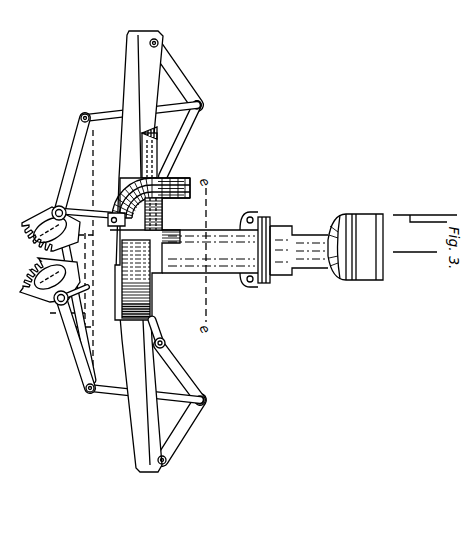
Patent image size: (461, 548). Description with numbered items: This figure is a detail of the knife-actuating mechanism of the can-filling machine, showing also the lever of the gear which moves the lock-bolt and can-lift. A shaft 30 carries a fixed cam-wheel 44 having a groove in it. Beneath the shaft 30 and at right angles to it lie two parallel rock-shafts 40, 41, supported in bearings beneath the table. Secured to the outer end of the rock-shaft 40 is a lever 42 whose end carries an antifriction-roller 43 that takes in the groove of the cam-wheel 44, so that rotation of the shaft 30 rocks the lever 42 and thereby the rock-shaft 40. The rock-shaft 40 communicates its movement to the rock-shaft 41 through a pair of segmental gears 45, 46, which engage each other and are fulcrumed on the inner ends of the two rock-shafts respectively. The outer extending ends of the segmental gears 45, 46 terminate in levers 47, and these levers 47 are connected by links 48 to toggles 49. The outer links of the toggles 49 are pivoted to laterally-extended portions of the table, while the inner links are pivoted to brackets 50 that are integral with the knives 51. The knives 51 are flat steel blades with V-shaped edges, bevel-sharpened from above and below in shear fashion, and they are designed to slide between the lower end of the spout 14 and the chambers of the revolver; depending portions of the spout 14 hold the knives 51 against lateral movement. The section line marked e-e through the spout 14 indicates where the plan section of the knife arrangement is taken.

The spout 14 is at (166, 249).
The shaft 30 is at (143, 143).
The rock-shaft 40 is at (54, 209).
The rock-shaft 41 is at (56, 301).
The lever 42 is at (96, 211).
The antifriction-roller 43 is at (113, 232).
The cam-wheel 44 is at (167, 200).
The segmental gear 45 is at (41, 229).
The segmental gear 46 is at (30, 293).
The levers 47 is at (77, 128).
The links 48 is at (110, 113).
The toggles 49 is at (187, 89).
The brackets 50 is at (163, 337).
The knives 51 is at (152, 282).